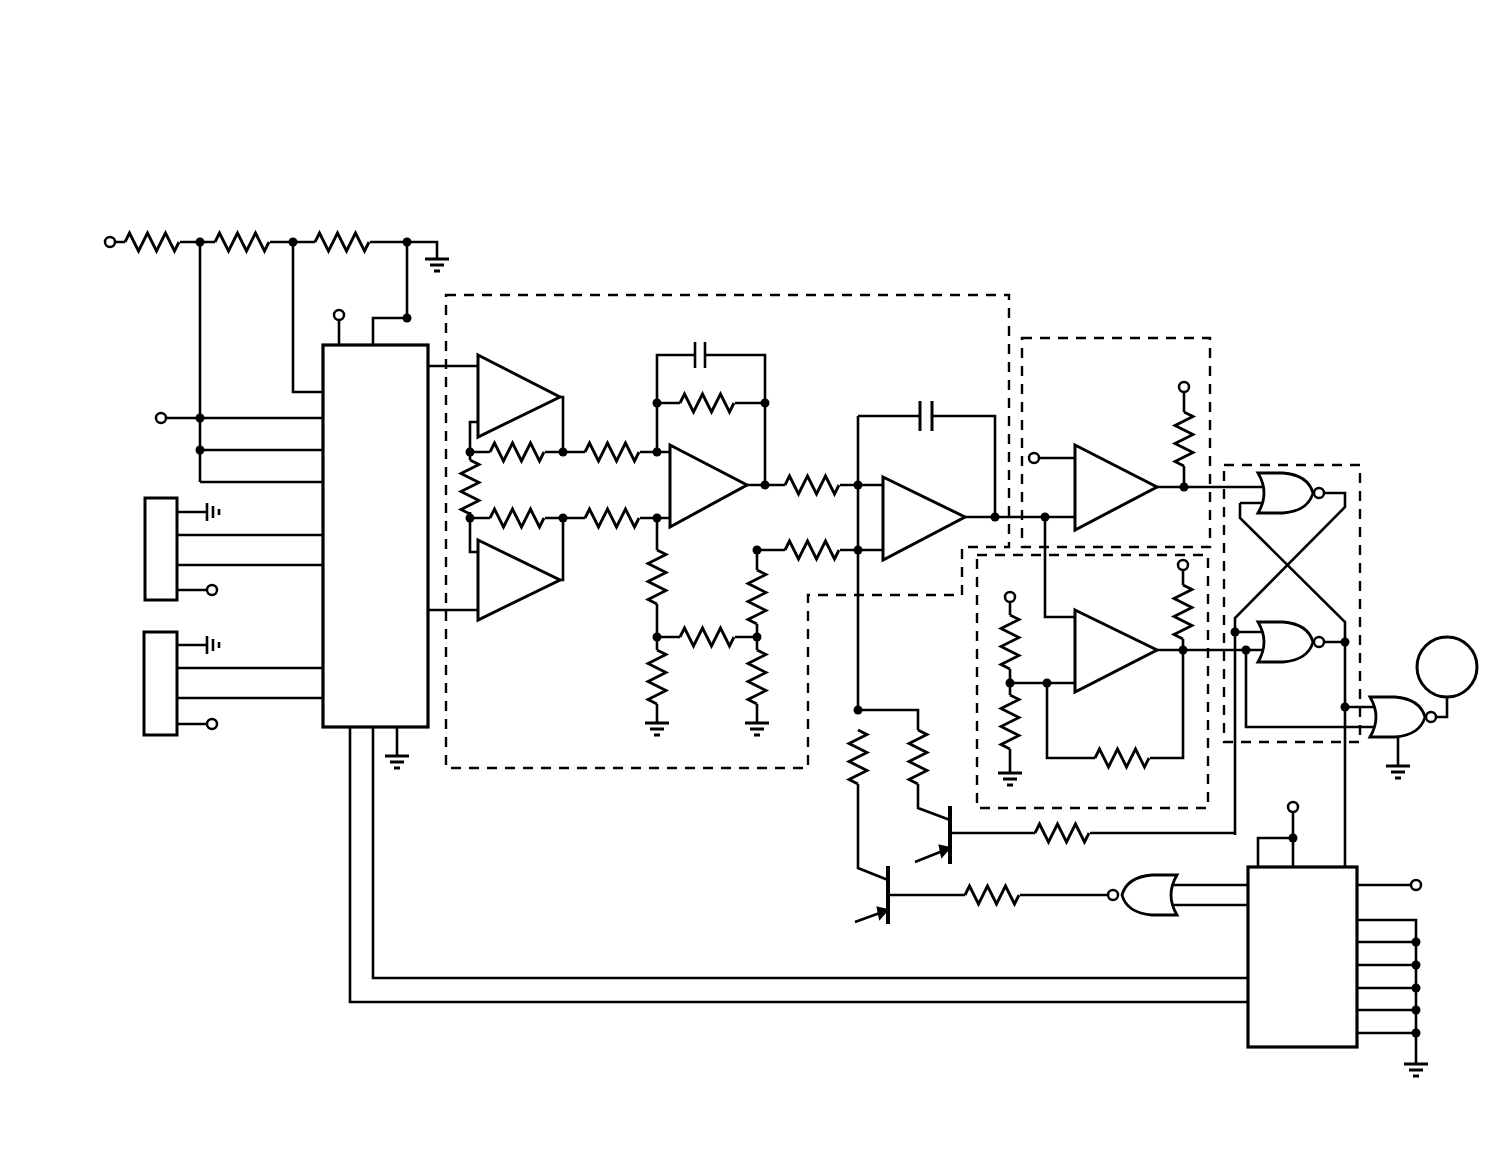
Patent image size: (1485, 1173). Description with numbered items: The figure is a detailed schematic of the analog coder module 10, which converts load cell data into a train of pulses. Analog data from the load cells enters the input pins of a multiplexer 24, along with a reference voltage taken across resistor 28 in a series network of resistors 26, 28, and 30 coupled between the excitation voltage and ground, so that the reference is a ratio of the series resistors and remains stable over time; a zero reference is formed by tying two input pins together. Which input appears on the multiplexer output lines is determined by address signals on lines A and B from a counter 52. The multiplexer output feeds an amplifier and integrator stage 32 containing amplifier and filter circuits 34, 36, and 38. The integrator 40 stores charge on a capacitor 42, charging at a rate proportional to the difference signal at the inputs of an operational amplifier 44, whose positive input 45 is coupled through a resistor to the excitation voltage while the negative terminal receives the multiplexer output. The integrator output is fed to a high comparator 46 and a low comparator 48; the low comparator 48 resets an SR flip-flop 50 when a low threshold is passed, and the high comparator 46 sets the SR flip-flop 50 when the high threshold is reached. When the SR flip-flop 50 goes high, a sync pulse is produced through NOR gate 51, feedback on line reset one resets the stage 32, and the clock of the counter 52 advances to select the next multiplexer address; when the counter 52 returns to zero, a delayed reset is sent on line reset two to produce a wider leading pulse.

The coder module 10 is at (305, 975).
The multiplexer 24 is at (323, 712).
The resistor 26 is at (150, 232).
The resistor 28 is at (243, 232).
The resistor 30 is at (335, 232).
The amplifier and integrator stage 32 is at (760, 293).
The amplifier and filter circuit 34 is at (522, 378).
The amplifier and filter circuit 36 is at (538, 598).
The amplifier and filter circuit 38 is at (707, 462).
The integrator 40 is at (946, 528).
The capacitor 42 is at (933, 409).
The operational amplifier 44 is at (917, 491).
The positive input 45 is at (858, 549).
The high comparator 46 is at (1210, 353).
The low comparator 48 is at (977, 660).
The SR flip-flop 50 is at (1360, 501).
The NOR gate 51 is at (1392, 698).
The counter 52 is at (1248, 965).